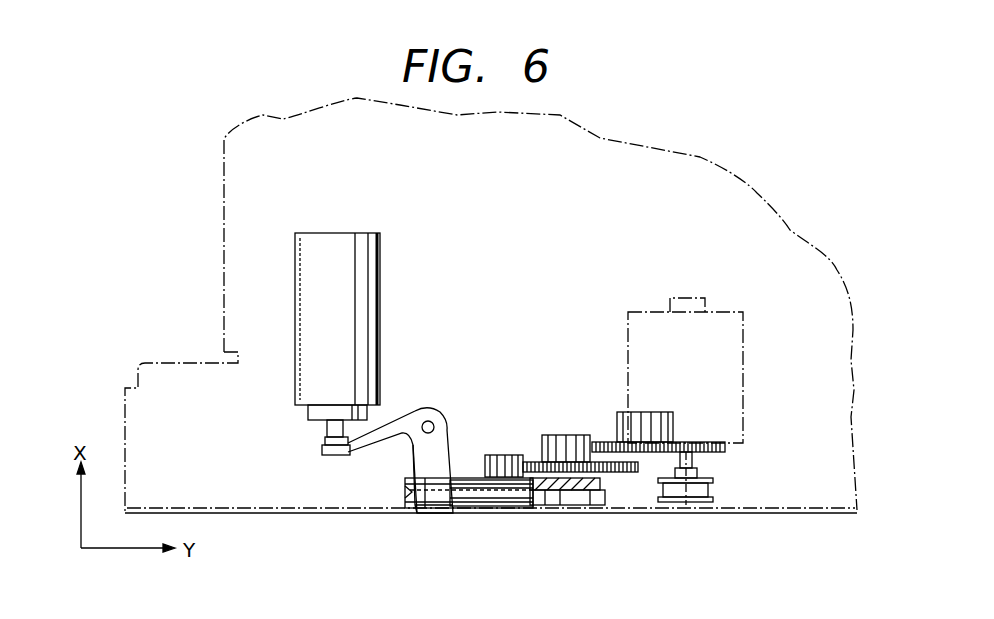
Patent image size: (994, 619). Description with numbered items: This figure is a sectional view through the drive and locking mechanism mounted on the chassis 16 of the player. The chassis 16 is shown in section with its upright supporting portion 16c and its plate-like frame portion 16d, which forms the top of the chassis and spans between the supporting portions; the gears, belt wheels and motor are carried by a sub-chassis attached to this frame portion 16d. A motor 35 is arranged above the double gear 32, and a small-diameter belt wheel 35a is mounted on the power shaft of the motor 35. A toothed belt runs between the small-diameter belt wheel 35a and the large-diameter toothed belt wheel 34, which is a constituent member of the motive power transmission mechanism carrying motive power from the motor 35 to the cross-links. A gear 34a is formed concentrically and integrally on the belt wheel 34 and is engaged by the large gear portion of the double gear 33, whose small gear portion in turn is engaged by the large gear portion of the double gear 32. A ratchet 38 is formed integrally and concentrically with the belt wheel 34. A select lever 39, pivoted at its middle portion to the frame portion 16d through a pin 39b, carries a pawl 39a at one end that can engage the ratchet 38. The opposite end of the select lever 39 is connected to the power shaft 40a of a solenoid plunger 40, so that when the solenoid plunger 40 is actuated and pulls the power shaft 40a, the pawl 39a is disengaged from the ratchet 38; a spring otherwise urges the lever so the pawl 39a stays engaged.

The chassis 16 is at (222, 215).
The supporting portion 16c is at (785, 512).
The frame portion 16d is at (172, 370).
The double gear 32 is at (606, 442).
The double gear 33 is at (623, 478).
The large-diameter toothed belt wheel 34 is at (465, 490).
The gear 34a is at (512, 454).
The motor 35 is at (735, 312).
The small-diameter belt wheel 35a is at (703, 499).
The ratchet 38 is at (488, 509).
The select lever 39 is at (405, 435).
The pawl 39a is at (434, 514).
The pin 39b is at (428, 420).
The solenoid plunger 40 is at (328, 232).
The power shaft 40a is at (336, 456).